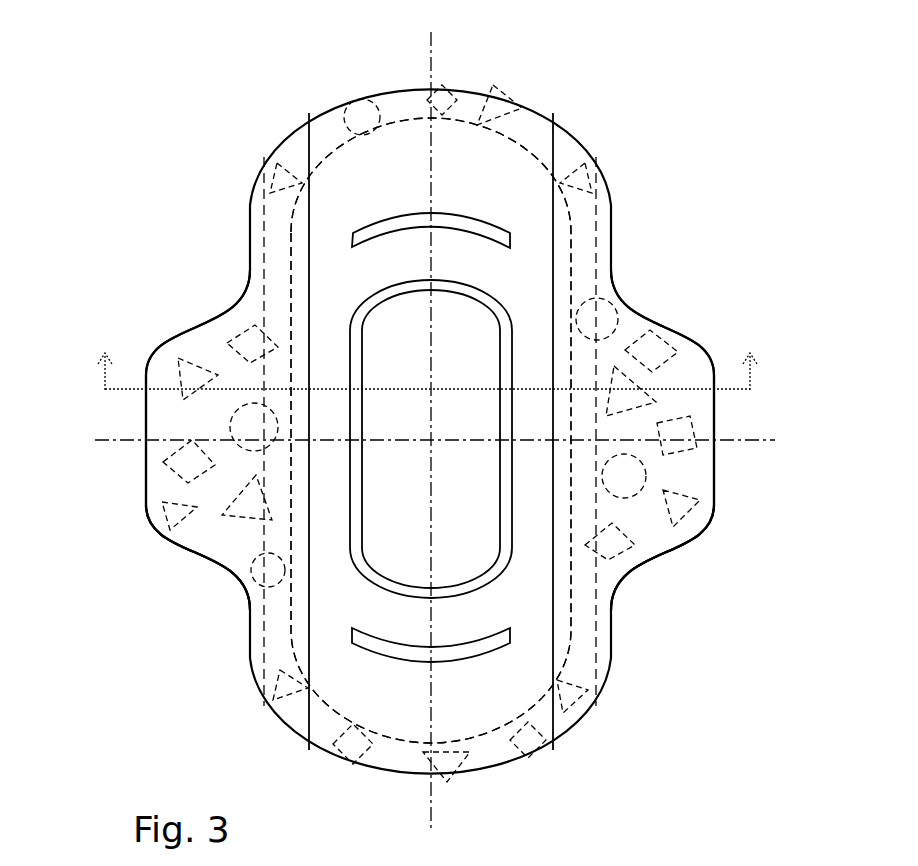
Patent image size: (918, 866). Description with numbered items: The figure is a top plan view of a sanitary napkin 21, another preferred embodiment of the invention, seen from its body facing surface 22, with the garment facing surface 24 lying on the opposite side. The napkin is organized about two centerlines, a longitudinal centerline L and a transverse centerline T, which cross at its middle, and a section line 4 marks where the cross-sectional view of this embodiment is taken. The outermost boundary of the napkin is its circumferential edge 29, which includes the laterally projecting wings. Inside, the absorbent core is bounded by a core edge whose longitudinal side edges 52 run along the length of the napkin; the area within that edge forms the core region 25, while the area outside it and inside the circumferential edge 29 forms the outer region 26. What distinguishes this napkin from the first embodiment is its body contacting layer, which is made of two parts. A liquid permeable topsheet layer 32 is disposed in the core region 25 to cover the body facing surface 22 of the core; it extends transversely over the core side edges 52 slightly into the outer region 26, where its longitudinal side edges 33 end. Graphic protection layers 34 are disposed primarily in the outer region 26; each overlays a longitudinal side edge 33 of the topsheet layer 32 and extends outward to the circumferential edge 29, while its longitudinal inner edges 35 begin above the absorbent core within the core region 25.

The sanitary napkin 21 is at (637, 108).
The body facing surface 22 is at (517, 200).
The garment facing surface 24 is at (490, 265).
The core region 25 is at (356, 607).
The outer region 26 is at (478, 98).
The circumferential edge 29 is at (716, 410).
The liquid permeable topsheet layer 32 is at (478, 362).
The longitudinal side edges 33 is at (636, 325).
The graphic protection layers 34 is at (660, 552).
The longitudinal inner edges 35 is at (324, 138).
The longitudinal side edges of core 52 is at (600, 240).
The section line 4- 4 is at (427, 358).
The longitudinal centerline L is at (428, 63).
The transverse centerline T is at (125, 438).